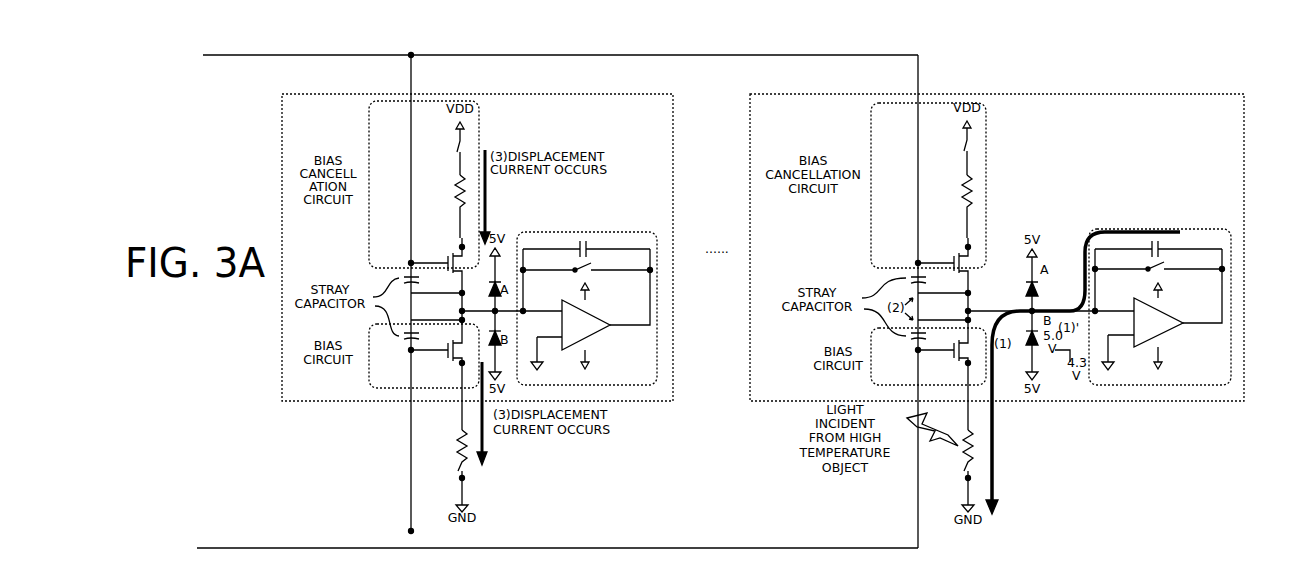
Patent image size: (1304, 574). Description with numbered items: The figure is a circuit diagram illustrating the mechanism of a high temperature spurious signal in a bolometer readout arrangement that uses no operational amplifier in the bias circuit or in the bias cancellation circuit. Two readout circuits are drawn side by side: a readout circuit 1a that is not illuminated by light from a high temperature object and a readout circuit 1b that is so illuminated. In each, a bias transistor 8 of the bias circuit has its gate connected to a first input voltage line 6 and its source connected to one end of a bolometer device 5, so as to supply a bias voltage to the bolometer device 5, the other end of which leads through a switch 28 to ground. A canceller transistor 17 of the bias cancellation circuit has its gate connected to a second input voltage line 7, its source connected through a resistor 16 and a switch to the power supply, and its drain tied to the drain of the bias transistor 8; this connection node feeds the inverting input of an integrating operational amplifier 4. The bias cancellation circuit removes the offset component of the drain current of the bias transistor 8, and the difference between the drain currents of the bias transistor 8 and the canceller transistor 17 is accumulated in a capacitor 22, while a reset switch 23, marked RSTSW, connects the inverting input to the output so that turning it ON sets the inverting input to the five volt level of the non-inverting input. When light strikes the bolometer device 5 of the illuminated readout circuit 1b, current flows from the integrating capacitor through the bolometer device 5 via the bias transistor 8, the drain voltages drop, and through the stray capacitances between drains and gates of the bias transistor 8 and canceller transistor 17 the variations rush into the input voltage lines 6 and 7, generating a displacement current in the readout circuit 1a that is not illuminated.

The readout circuit 1a is at (673, 165).
The readout circuit 1b is at (963, 100).
The integrating operational amplifier 4 is at (874, 293).
The bolometer device 5 is at (719, 465).
The first input voltage line 6 is at (282, 547).
The second input voltage line 7 is at (372, 55).
The bias transistor 8 is at (410, 381).
The resistor 16 is at (462, 188).
The canceller transistor 17 is at (450, 253).
The capacitor 22 is at (560, 248).
The reset switch 23 is at (587, 272).
The switch 28 is at (468, 478).